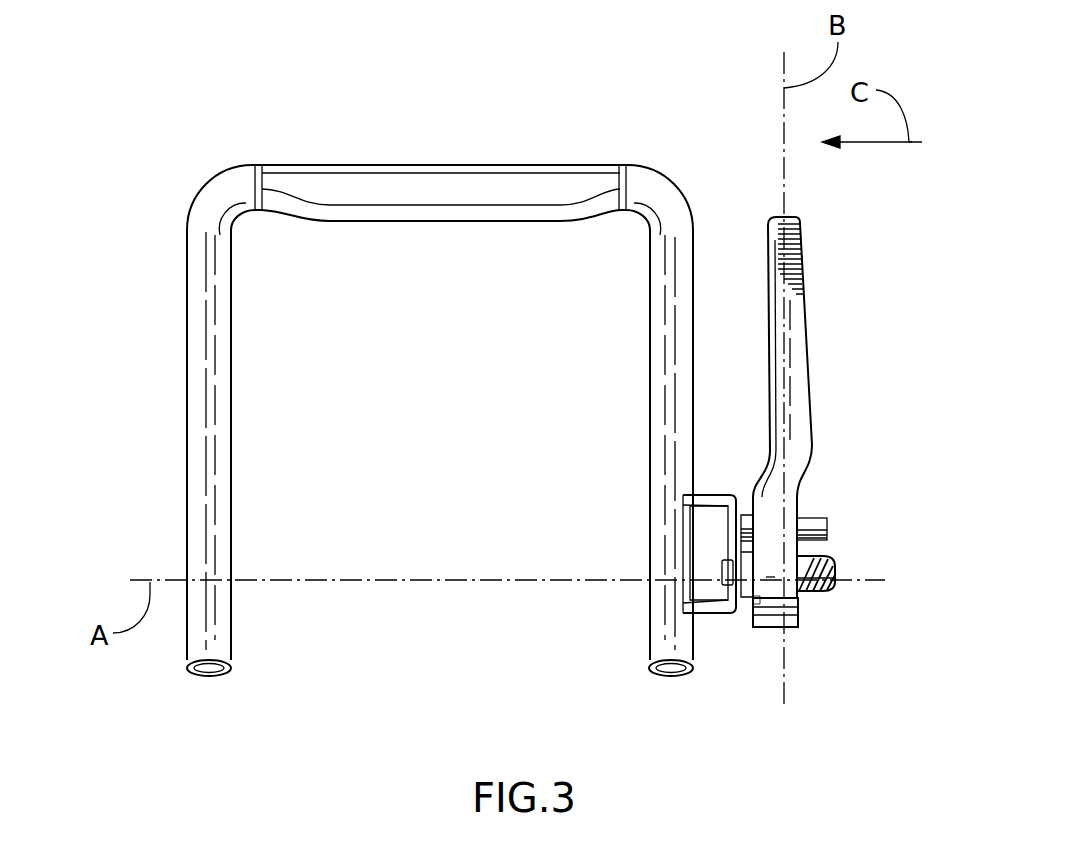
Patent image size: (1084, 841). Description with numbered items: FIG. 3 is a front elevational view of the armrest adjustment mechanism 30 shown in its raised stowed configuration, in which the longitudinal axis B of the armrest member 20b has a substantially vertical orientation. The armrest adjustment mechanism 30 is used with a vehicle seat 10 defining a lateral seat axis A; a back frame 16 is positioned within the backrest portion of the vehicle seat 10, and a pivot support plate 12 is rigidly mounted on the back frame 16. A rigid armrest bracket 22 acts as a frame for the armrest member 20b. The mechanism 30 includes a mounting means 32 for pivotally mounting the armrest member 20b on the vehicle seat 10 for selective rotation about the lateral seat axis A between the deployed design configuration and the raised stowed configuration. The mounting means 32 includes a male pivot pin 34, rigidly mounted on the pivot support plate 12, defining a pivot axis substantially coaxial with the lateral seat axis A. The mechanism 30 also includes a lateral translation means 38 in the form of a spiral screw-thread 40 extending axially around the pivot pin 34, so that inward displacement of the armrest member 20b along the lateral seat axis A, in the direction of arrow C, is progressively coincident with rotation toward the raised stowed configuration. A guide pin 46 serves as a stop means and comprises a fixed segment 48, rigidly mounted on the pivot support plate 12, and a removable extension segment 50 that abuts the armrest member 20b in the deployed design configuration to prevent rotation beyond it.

The vehicle seat 10 is at (562, 138).
The back frame 16 is at (202, 227).
The pivot support plate 12 is at (725, 495).
The armrest bracket 22 is at (802, 268).
The armrest member 20b is at (848, 338).
The fixed segment 48 is at (752, 512).
The extension segment 50 is at (812, 526).
The guide pin 46 is at (872, 408).
The spiral screw-thread 40 is at (820, 558).
The male pivot pin 34 is at (836, 580).
The mounting means 32 is at (746, 620).
The armrest adjustment mechanism 30 is at (806, 630).
The lateral translation means 38 is at (820, 618).